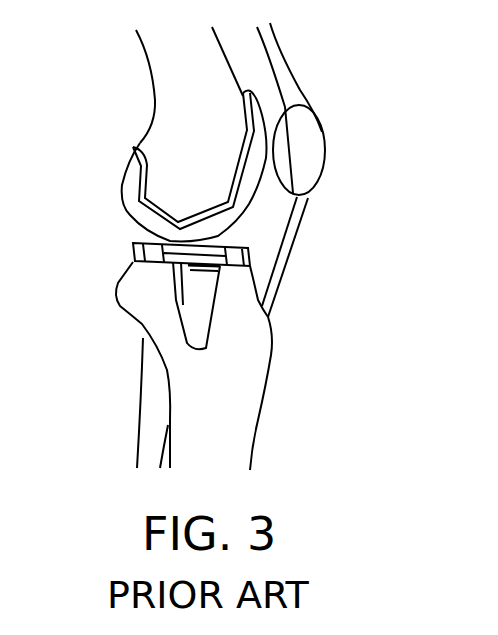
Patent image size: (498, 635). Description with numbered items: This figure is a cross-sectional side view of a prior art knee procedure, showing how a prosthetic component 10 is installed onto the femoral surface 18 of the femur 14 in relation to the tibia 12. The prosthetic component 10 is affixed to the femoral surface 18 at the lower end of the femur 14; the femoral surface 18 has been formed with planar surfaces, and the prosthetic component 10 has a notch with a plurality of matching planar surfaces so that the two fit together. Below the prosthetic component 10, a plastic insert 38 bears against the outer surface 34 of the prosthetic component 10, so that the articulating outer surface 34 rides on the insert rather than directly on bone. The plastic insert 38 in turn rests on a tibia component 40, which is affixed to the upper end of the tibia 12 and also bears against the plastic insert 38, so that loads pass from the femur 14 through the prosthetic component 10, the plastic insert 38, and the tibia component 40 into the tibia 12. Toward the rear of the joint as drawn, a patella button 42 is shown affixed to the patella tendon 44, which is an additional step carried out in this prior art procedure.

The prosthetic component 10 is at (123, 198).
The tibia 12 is at (248, 385).
The femur 14 is at (163, 68).
The femoral surface 18 is at (130, 148).
The outer surface 34 is at (235, 217).
The plastic insert 38 is at (135, 237).
The tibia component 40 is at (172, 308).
The patella button 42 is at (285, 148).
The patella tendon 44 is at (291, 71).